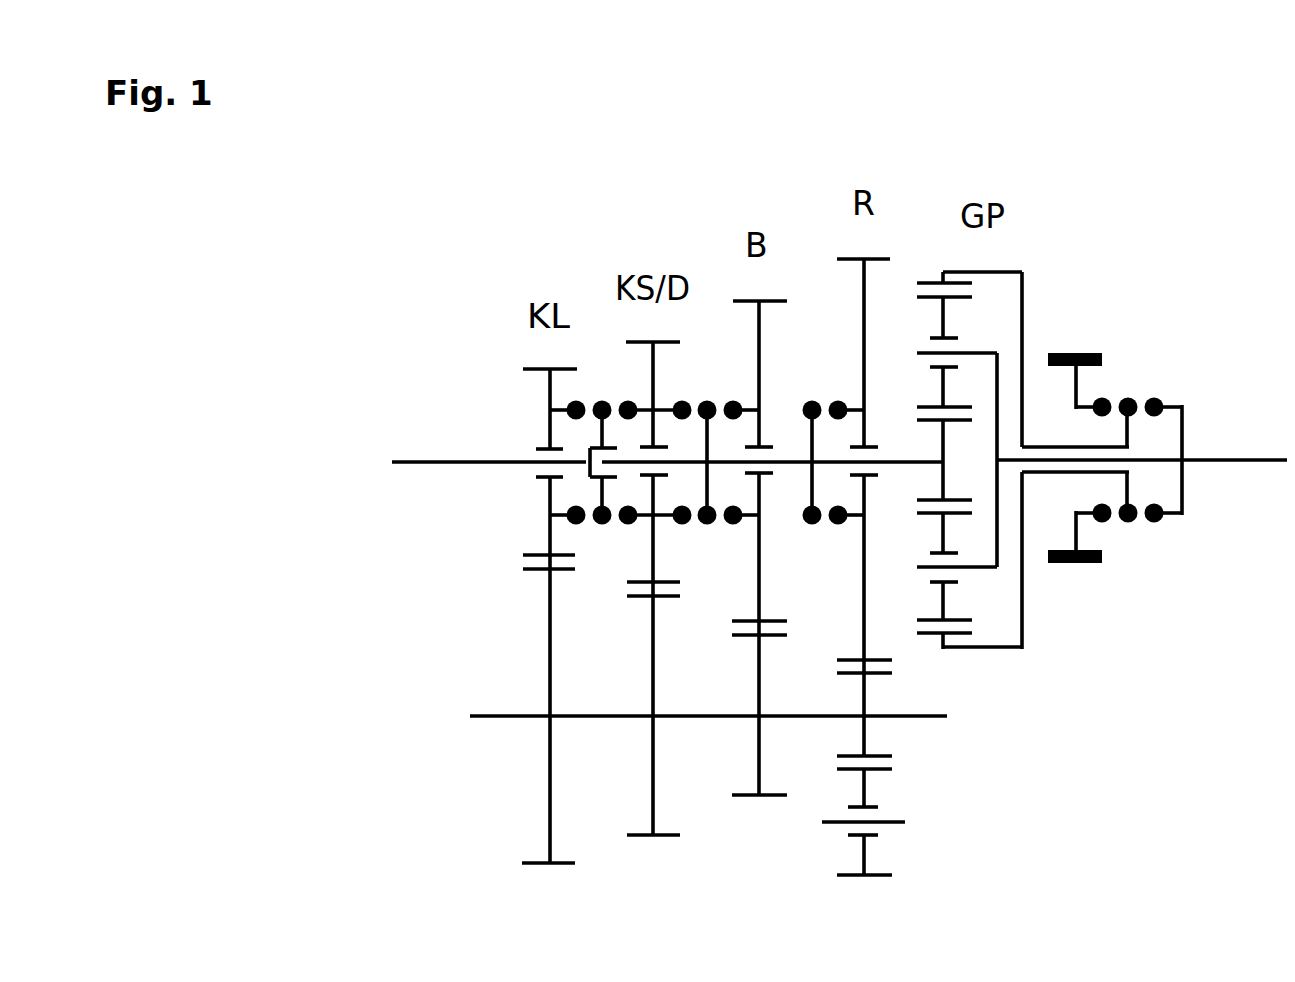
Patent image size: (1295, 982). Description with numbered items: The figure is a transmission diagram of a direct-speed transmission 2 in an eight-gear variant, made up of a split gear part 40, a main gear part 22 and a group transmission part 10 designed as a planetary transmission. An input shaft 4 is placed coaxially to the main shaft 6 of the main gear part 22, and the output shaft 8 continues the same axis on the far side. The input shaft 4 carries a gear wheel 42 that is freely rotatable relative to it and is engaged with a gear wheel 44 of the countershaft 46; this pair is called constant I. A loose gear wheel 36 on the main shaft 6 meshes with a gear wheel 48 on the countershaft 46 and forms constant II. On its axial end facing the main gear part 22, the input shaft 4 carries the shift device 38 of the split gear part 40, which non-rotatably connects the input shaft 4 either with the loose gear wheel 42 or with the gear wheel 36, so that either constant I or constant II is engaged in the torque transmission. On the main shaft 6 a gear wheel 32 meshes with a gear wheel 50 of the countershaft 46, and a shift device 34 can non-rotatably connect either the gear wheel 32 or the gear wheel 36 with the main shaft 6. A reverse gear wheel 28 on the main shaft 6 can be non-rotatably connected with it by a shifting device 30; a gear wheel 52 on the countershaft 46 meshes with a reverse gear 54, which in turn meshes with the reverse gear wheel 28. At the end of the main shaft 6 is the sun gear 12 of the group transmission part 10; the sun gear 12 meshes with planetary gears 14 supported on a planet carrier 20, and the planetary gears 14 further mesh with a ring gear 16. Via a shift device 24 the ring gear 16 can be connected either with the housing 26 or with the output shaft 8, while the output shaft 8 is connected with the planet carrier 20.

The transmission 2 is at (435, 365).
The input shaft 4 is at (442, 462).
The main shaft 6 is at (795, 460).
The output shaft 8 is at (1225, 460).
The group transmission part 10 is at (977, 140).
The sun gear 12 is at (945, 480).
The planetary gears 14 is at (947, 325).
The ring gear 16 is at (950, 653).
The planet carrier 20 is at (997, 377).
The main gear part 22 is at (767, 125).
The shift device 24 is at (1132, 522).
The housing 26 is at (1080, 388).
The reverse gear wheel 28 is at (865, 318).
The shifting device 30 is at (812, 525).
The gear wheel 32 is at (759, 360).
The shift device 34 is at (707, 525).
The gear wheel 36 is at (655, 367).
The shift device 38 is at (602, 525).
The split gear part 40 is at (589, 130).
The gear wheel 42 is at (548, 385).
The gear wheel 44 is at (545, 770).
The countershaft 46 is at (493, 718).
The gear wheel 48 is at (650, 780).
The gear wheel 50 is at (756, 757).
The gear wheel 52 is at (865, 703).
The reverse gear 54 is at (866, 793).